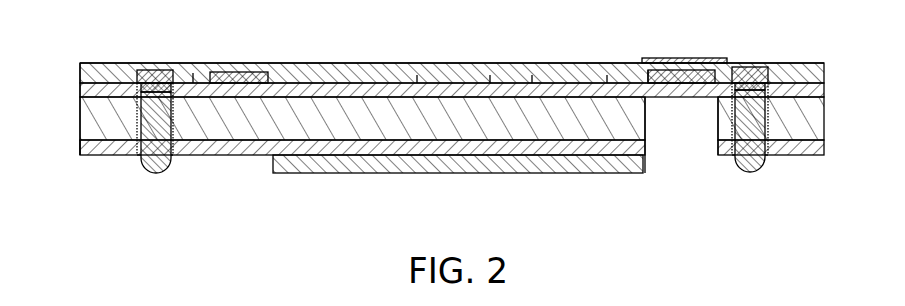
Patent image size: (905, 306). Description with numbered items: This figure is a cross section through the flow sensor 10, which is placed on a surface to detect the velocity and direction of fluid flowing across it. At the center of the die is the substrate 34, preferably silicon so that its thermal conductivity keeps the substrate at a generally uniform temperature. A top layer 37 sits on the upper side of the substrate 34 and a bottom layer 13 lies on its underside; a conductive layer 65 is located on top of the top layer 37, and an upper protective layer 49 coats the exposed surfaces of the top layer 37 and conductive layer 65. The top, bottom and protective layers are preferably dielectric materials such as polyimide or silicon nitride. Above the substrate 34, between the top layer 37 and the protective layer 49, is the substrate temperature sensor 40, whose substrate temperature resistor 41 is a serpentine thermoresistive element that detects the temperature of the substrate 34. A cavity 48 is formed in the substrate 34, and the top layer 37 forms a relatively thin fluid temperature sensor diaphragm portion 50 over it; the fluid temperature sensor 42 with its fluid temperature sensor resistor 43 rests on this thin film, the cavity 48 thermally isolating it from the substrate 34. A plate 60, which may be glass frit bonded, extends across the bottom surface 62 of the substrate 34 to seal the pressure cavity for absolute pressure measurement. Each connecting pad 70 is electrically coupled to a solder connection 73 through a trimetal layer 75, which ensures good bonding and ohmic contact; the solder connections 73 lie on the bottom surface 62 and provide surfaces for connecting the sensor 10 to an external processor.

The flow sensor 10 is at (49, 155).
The bottom layer 13 is at (112, 155).
The substrate 34 is at (345, 131).
The top layer 37 is at (80, 92).
The substrate temperature sensor 40 is at (234, 72).
The substrate temperature resistor 41 is at (217, 72).
The fluid temperature sensor 42 is at (650, 70).
The fluid temperature sensor resistor 43 is at (676, 72).
The cavity 48 is at (681, 161).
The upper protective layer 49 is at (393, 63).
The fluid temperature sensor diaphragm portion 50 is at (688, 88).
The plate 60 is at (314, 173).
The bottom surface 62 is at (245, 155).
The conductive layer 65 is at (70, 73).
The connecting pad 70 is at (155, 70).
The solder connection 73 is at (152, 170).
The trimetal layer 75 is at (172, 88).